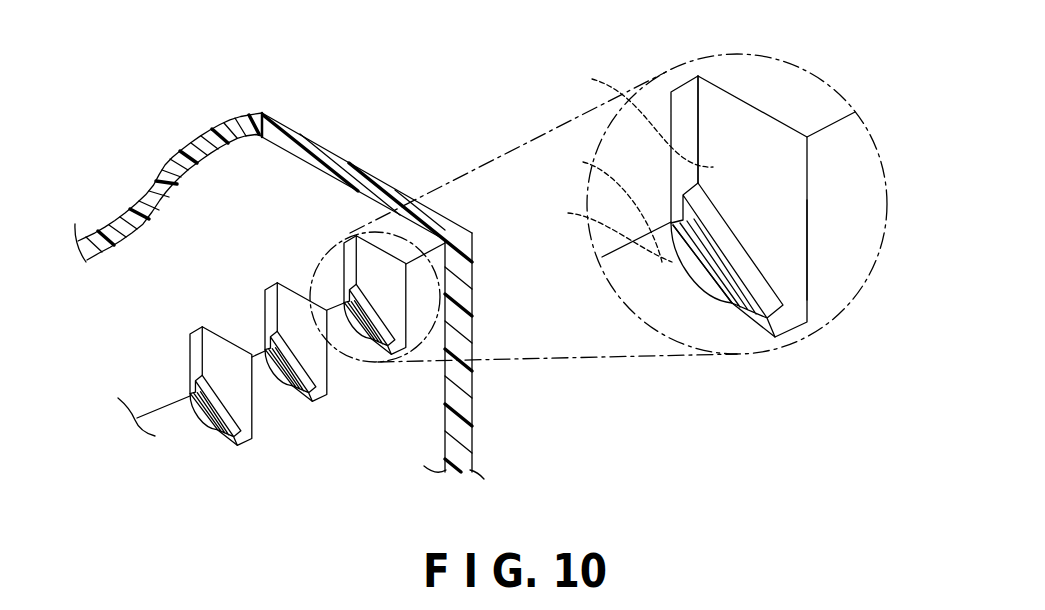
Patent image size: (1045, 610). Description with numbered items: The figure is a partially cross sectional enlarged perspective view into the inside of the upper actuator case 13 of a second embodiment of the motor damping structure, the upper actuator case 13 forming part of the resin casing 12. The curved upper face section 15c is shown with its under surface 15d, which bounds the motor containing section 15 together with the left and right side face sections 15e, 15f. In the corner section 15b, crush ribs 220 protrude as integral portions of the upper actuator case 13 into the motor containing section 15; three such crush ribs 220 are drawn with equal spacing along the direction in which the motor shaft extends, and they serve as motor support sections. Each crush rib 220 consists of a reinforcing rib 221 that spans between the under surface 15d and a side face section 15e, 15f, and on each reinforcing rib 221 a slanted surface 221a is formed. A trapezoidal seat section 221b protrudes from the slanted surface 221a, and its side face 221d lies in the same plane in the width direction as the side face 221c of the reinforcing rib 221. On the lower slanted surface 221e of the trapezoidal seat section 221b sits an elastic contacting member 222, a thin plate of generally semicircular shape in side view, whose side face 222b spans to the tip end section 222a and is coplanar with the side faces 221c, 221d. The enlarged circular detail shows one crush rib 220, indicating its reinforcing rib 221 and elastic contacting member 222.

The casing 12 is at (427, 175).
The upper actuator case 13 is at (341, 160).
The motor containing section 15 is at (331, 536).
The right corner section 15b is at (419, 274).
The upper face section 15c is at (192, 139).
The under surface 15d is at (137, 244).
The left side face section 15e is at (508, 356).
The right side face section 15f is at (418, 415).
The crush rib 220 is at (240, 450).
The reinforcing rib 221 is at (341, 249).
The slanted surface 221a is at (735, 258).
The trapezoidal seat section 221b is at (745, 292).
The side face of reinforcing rib 221c is at (626, 116).
The side face of trapezoidal seat section 221d is at (591, 205).
The lower slanted surface 221e is at (695, 245).
The elastic contacting member 222 is at (344, 323).
The tip end section 222a is at (209, 422).
The side face of elastic contacting member 222b is at (592, 228).